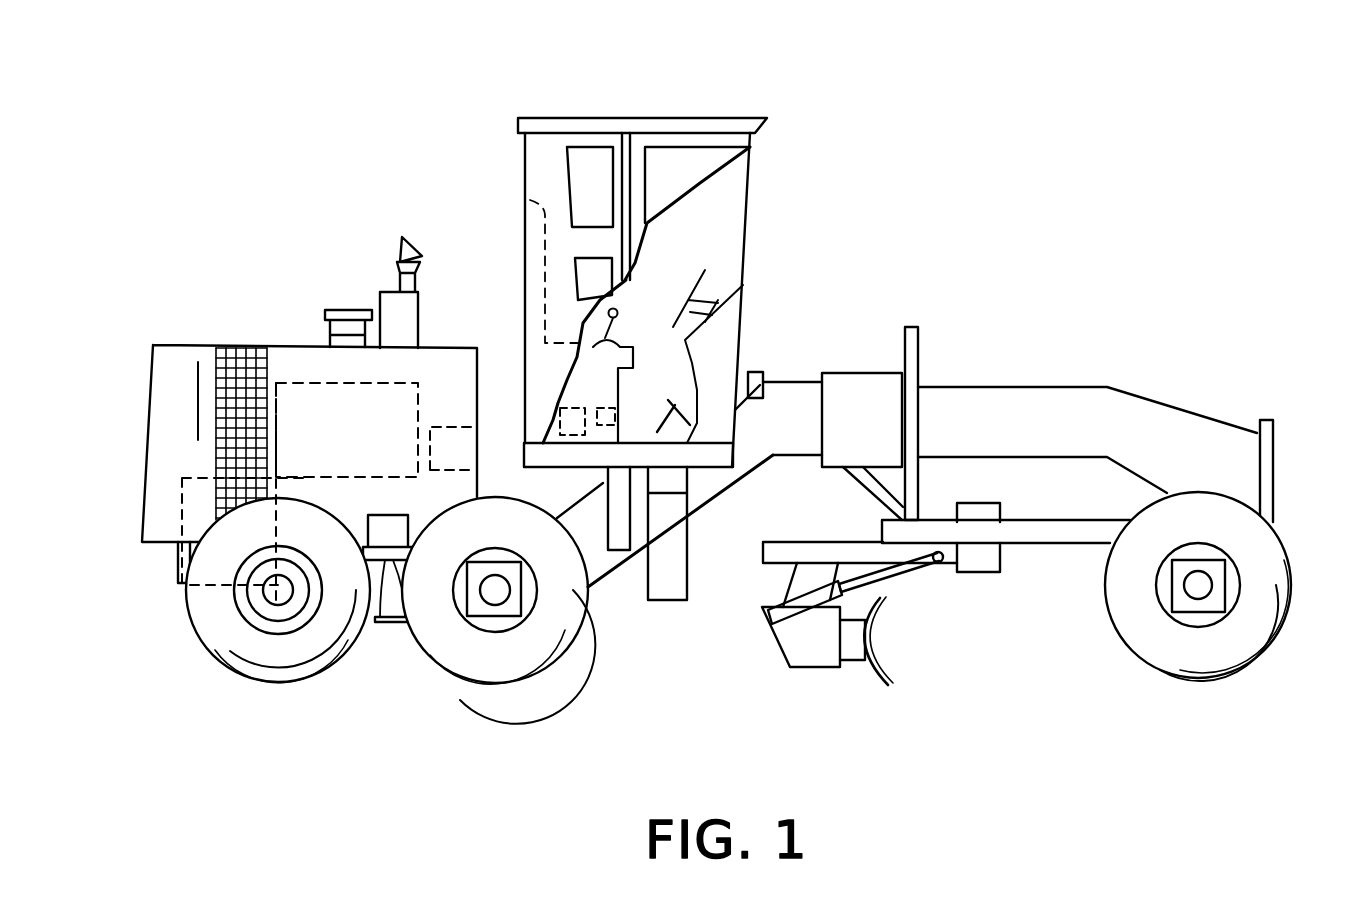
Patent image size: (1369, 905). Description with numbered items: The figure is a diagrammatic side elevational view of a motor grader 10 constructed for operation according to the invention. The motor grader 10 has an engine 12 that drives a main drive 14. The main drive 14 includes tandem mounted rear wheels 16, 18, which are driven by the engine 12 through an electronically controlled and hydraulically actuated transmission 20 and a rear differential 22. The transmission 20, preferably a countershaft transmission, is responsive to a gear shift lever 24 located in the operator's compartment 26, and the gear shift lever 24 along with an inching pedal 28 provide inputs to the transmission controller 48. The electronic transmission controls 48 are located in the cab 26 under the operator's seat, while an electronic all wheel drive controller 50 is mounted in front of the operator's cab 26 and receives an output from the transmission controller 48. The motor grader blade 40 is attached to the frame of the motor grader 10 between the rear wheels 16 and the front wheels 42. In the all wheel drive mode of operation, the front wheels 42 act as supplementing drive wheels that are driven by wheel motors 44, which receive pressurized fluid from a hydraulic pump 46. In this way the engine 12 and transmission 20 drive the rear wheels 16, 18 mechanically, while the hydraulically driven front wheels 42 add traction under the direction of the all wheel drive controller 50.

The motor grader 10 is at (1042, 240).
The engine 12 is at (337, 390).
The main drive 14 is at (182, 557).
The rear wheel 16 is at (552, 665).
The rear wheel 18 is at (213, 652).
The transmission 20 is at (378, 620).
The rear differential 22 is at (408, 620).
The gear shift lever 24 is at (588, 326).
The operator's compartment 26 is at (707, 118).
The inching pedal 28 is at (657, 413).
The motor grader blade 40 is at (870, 647).
The front wheels 42 is at (1262, 653).
The wheel motors 44 is at (1197, 603).
The hydraulic pump 46 is at (305, 467).
The transmission controller 48 is at (565, 390).
The all wheel drive controller 50 is at (767, 378).